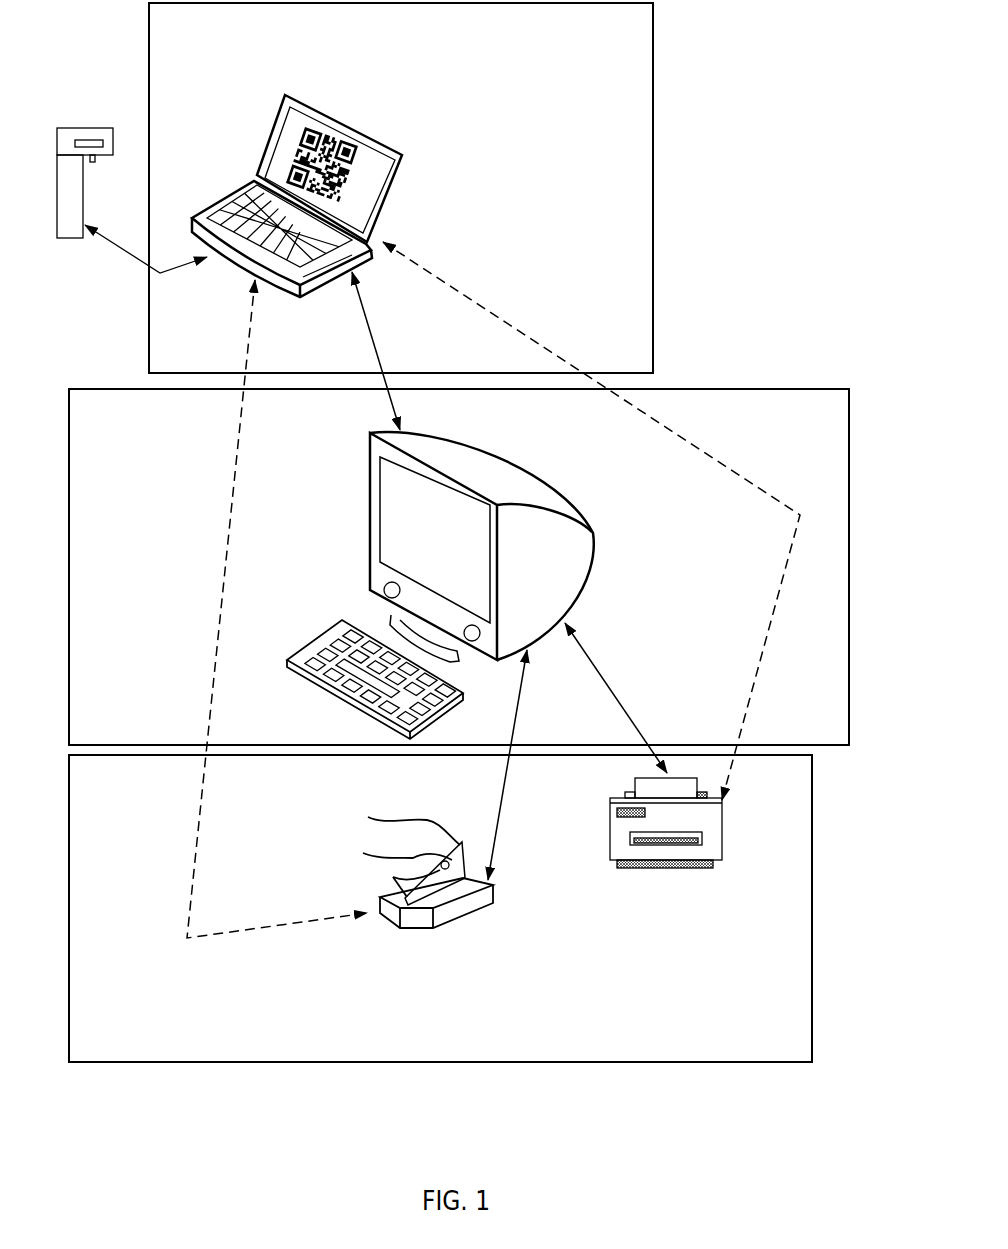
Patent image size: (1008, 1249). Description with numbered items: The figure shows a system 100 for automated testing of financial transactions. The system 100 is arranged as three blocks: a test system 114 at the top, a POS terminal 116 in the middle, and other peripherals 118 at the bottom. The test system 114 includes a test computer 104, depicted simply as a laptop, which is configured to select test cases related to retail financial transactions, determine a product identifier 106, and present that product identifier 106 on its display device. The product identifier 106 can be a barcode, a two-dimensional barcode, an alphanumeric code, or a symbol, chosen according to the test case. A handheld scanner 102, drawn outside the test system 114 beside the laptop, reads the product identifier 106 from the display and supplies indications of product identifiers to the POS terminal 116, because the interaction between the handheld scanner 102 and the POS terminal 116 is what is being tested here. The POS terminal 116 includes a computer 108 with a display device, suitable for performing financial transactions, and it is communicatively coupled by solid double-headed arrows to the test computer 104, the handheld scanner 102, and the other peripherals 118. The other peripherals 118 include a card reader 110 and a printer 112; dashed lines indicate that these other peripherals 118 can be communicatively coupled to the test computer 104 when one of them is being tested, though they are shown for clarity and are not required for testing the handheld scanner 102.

The system 100 is at (730, 48).
The handheld scanner 102 is at (67, 127).
The test computer 104 is at (337, 115).
The product identifier 106 is at (340, 173).
The computer 108 is at (503, 448).
The card reader 110 is at (427, 930).
The printer 112 is at (700, 868).
The test system 114 is at (653, 145).
The POS terminal 116 is at (772, 388).
The other peripherals 118 is at (763, 1062).